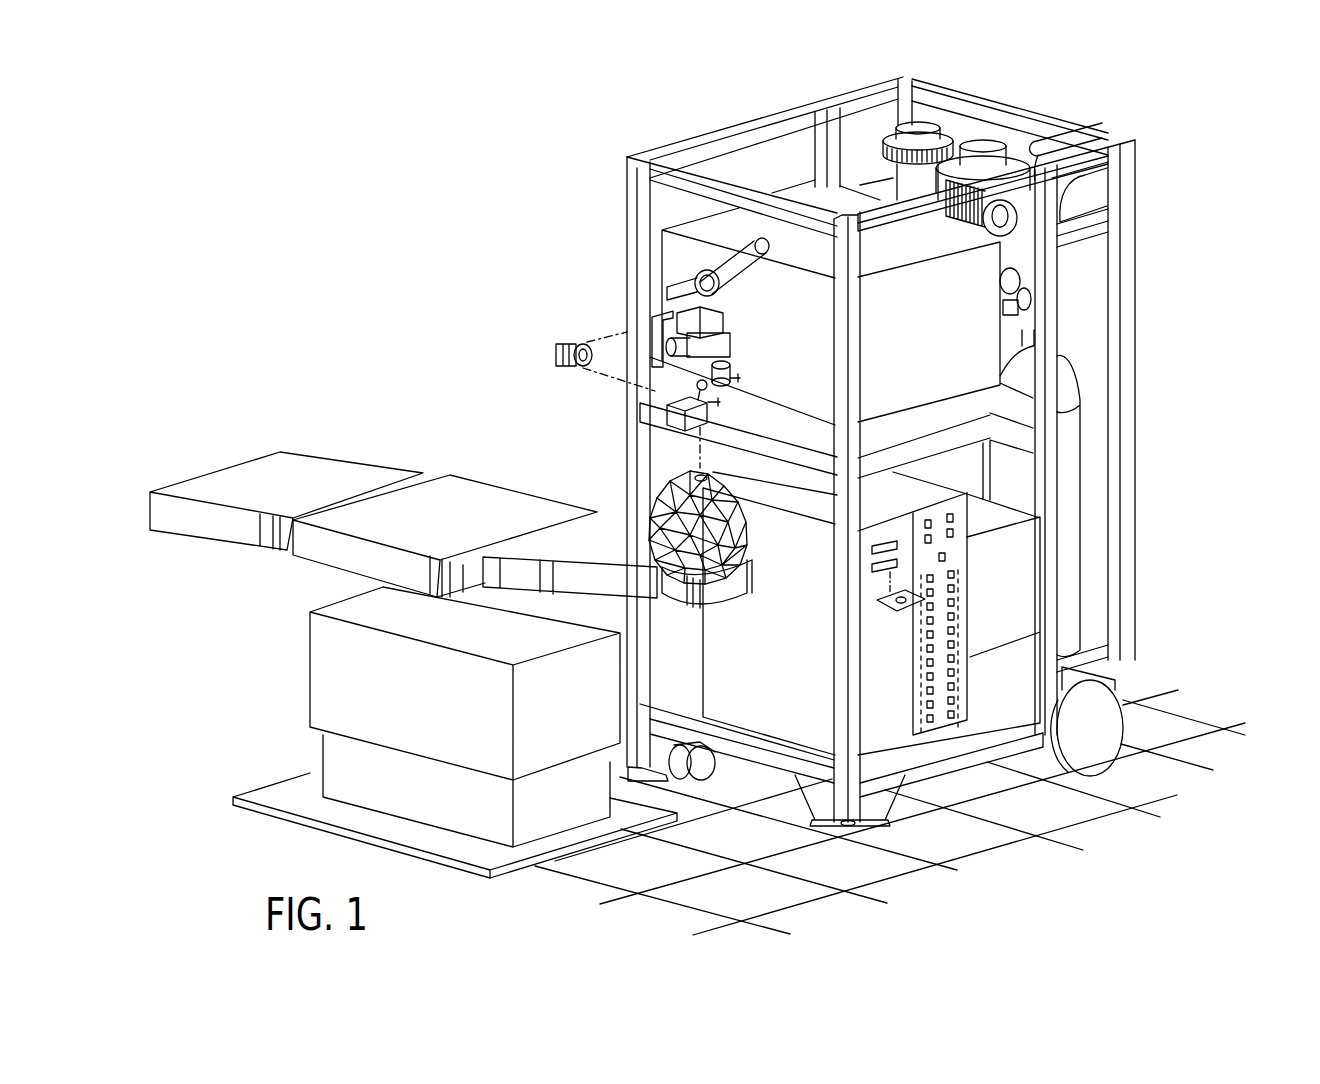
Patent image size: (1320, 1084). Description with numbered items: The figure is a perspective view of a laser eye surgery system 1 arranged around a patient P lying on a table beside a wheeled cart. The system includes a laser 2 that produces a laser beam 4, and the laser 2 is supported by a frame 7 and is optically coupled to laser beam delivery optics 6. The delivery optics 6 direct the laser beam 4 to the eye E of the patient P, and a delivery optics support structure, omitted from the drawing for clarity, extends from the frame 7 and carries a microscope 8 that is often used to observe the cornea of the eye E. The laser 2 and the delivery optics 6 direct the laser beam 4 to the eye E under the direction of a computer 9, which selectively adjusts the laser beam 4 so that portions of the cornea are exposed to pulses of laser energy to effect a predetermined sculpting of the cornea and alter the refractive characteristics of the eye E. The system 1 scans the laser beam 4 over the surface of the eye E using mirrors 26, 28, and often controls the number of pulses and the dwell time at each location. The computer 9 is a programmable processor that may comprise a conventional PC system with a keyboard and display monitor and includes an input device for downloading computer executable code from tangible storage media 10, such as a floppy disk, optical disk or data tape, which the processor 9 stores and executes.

The laser eye surgery system 1 is at (256, 99).
The laser 2 is at (1166, 258).
The laser beam 4 is at (618, 332).
The laser beam delivery optics 6 is at (648, 397).
The frame 7 is at (745, 133).
The microscope 8 is at (737, 307).
The computer 9 is at (979, 772).
The tangible storage media 10 is at (890, 614).
The mirror 26 is at (555, 346).
The mirror 28 is at (556, 365).
The eye E is at (710, 471).
The patient P is at (752, 530).